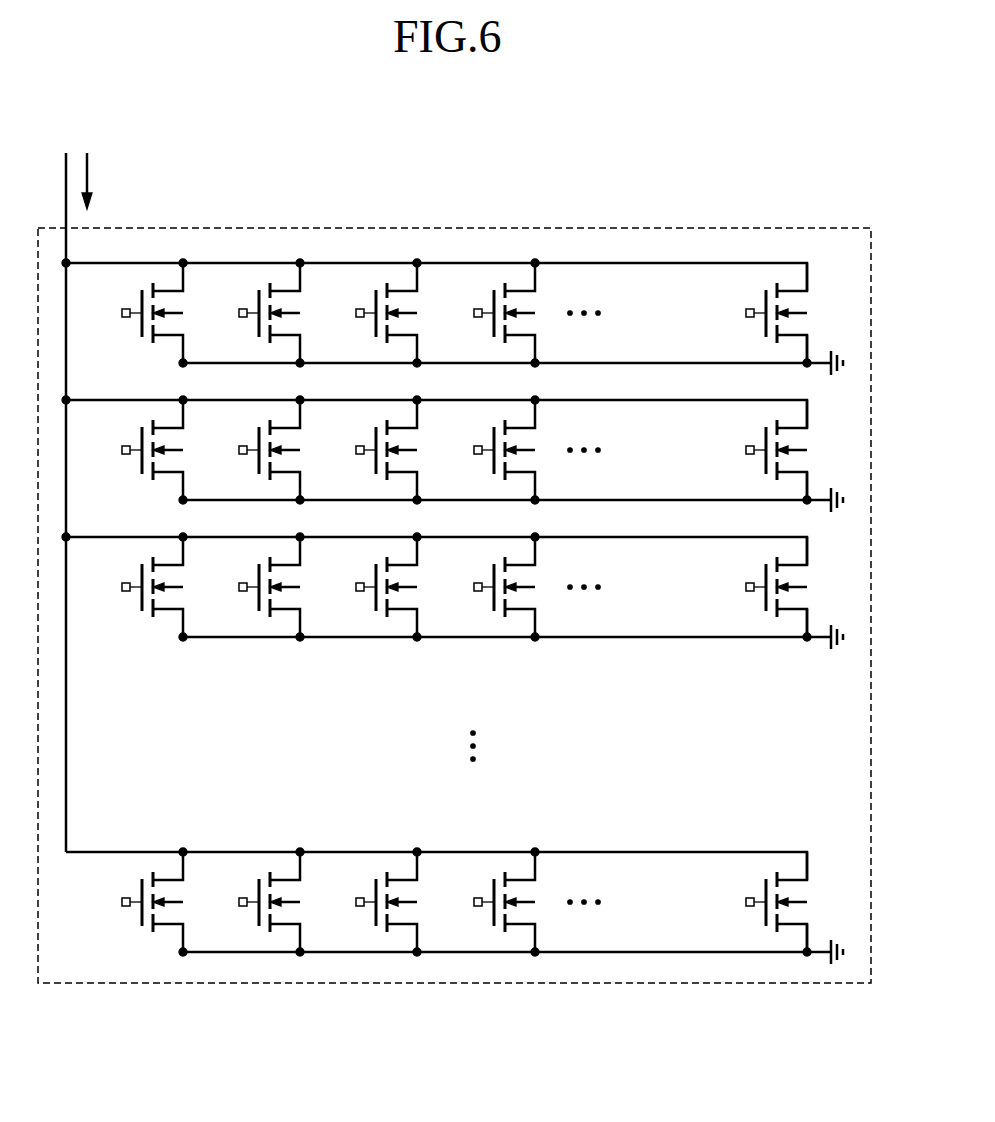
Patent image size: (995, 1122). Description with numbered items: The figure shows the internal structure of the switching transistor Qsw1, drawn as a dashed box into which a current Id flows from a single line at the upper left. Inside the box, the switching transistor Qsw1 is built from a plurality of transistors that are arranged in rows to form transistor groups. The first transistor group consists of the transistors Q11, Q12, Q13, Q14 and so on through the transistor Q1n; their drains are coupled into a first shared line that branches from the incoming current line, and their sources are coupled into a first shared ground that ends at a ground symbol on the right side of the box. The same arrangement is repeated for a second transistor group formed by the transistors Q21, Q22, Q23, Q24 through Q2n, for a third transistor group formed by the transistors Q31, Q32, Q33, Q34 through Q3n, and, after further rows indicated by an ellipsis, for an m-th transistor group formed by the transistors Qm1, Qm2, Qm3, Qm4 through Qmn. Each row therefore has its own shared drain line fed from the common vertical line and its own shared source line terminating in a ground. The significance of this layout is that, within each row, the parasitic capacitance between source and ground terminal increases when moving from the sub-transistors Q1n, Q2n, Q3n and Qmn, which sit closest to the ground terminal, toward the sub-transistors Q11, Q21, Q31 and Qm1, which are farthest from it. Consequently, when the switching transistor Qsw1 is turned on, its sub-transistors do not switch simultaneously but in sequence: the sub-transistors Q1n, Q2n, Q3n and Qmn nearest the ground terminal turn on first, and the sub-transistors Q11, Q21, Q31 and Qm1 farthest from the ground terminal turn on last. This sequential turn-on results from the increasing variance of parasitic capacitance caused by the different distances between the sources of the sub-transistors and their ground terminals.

The drive current Id is at (98, 180).
The switching transistor Qsw1 is at (838, 202).
The transistor Q11 is at (141, 313).
The transistor Q12 is at (258, 313).
The transistor Q13 is at (375, 313).
The transistor Q14 is at (493, 313).
The transistor Q1n is at (762, 313).
The transistor Q21 is at (141, 450).
The transistor Q22 is at (258, 450).
The transistor Q23 is at (375, 450).
The transistor Q24 is at (493, 450).
The transistor Q2n is at (762, 450).
The transistor Q31 is at (141, 587).
The transistor Q32 is at (258, 587).
The transistor Q33 is at (375, 587).
The transistor Q34 is at (493, 587).
The transistor Q3n is at (762, 587).
The transistor Qm1 is at (139, 902).
The transistor Qm2 is at (256, 902).
The transistor Qm3 is at (373, 902).
The transistor Qm4 is at (491, 902).
The transistor Qmn is at (761, 902).